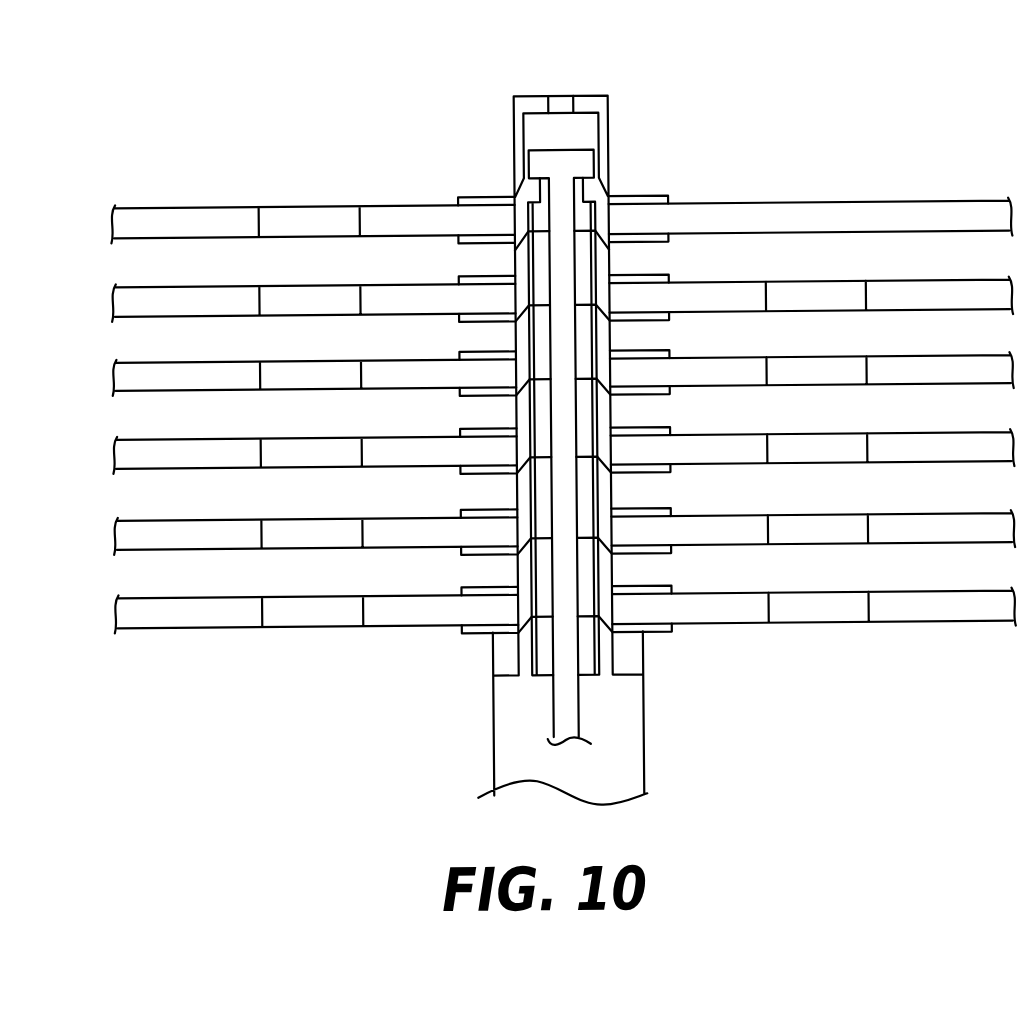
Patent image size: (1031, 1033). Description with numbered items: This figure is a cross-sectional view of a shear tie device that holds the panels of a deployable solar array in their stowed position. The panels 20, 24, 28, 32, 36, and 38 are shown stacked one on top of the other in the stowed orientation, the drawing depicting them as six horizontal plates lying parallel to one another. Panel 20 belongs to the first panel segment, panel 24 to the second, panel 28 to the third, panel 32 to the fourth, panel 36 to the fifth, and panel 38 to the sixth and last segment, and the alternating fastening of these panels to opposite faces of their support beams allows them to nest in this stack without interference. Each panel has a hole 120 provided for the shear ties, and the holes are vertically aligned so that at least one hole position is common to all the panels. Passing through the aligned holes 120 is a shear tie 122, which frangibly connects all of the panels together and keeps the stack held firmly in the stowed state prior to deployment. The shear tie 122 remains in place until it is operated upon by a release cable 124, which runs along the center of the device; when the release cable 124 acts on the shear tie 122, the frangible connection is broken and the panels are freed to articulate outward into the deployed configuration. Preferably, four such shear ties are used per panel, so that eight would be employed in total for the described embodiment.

The panel 20 is at (278, 625).
The panel 24 is at (421, 557).
The panel 28 is at (143, 429).
The panel 32 is at (139, 354).
The panel 36 is at (422, 273).
The panel 38 is at (204, 194).
The hole 120 is at (622, 192).
The shear tie 122 is at (622, 257).
The release cable 124 is at (560, 134).